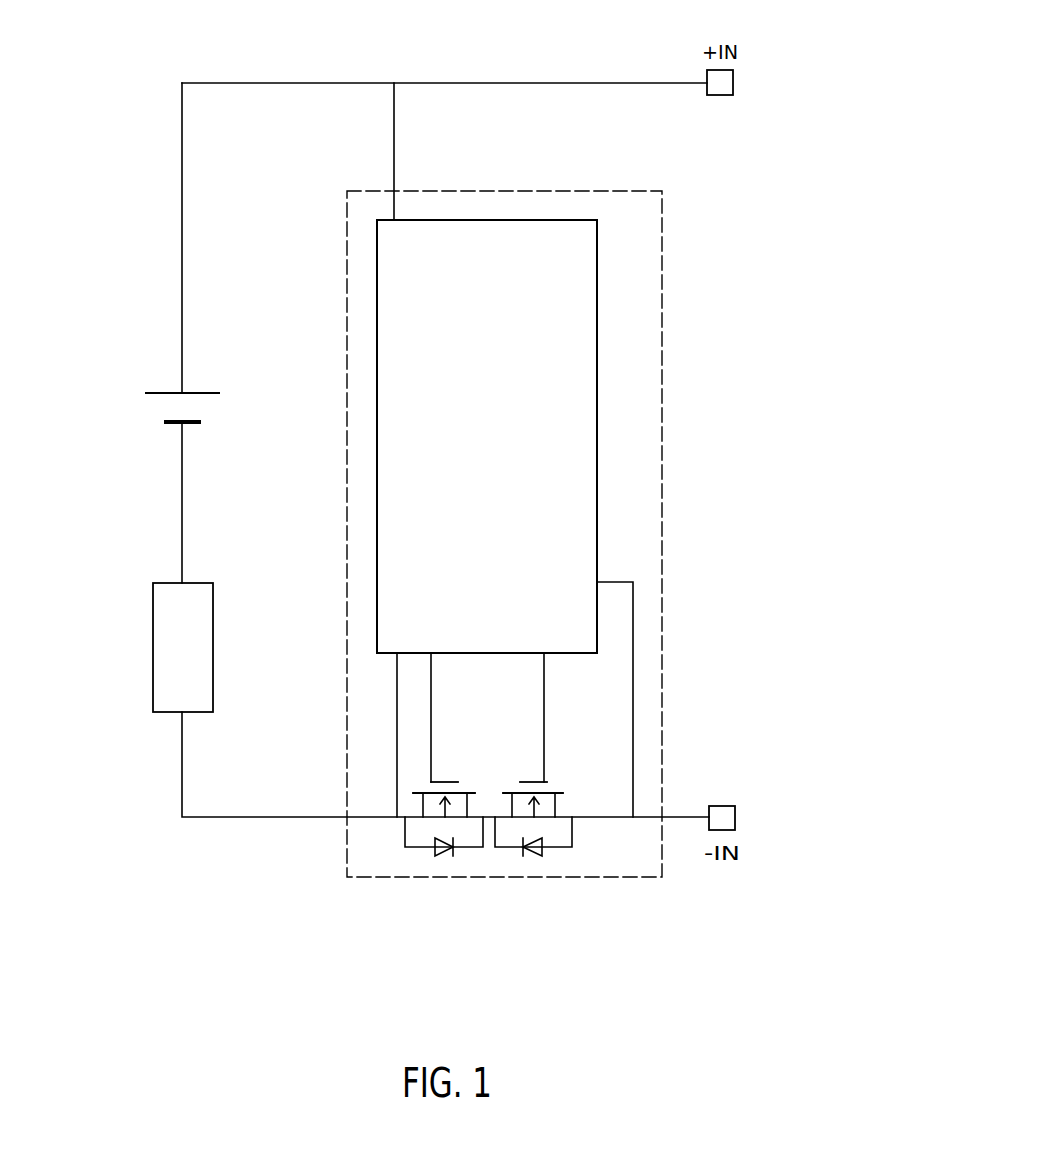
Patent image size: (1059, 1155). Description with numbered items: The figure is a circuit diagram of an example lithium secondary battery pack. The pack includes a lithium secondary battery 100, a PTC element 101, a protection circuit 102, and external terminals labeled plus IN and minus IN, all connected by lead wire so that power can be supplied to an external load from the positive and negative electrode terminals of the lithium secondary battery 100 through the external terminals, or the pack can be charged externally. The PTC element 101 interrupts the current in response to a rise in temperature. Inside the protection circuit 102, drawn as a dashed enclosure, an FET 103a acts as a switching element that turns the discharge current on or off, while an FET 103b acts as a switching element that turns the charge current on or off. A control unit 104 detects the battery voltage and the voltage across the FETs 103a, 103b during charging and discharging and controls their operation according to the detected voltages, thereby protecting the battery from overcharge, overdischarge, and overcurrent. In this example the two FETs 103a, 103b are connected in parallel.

The lithium secondary battery 100 is at (152, 410).
The PTC element 101 is at (153, 650).
The protection circuit 102 is at (663, 357).
The field effect transistor 103a is at (445, 855).
The FET 103b is at (540, 855).
The control unit 104 is at (377, 280).